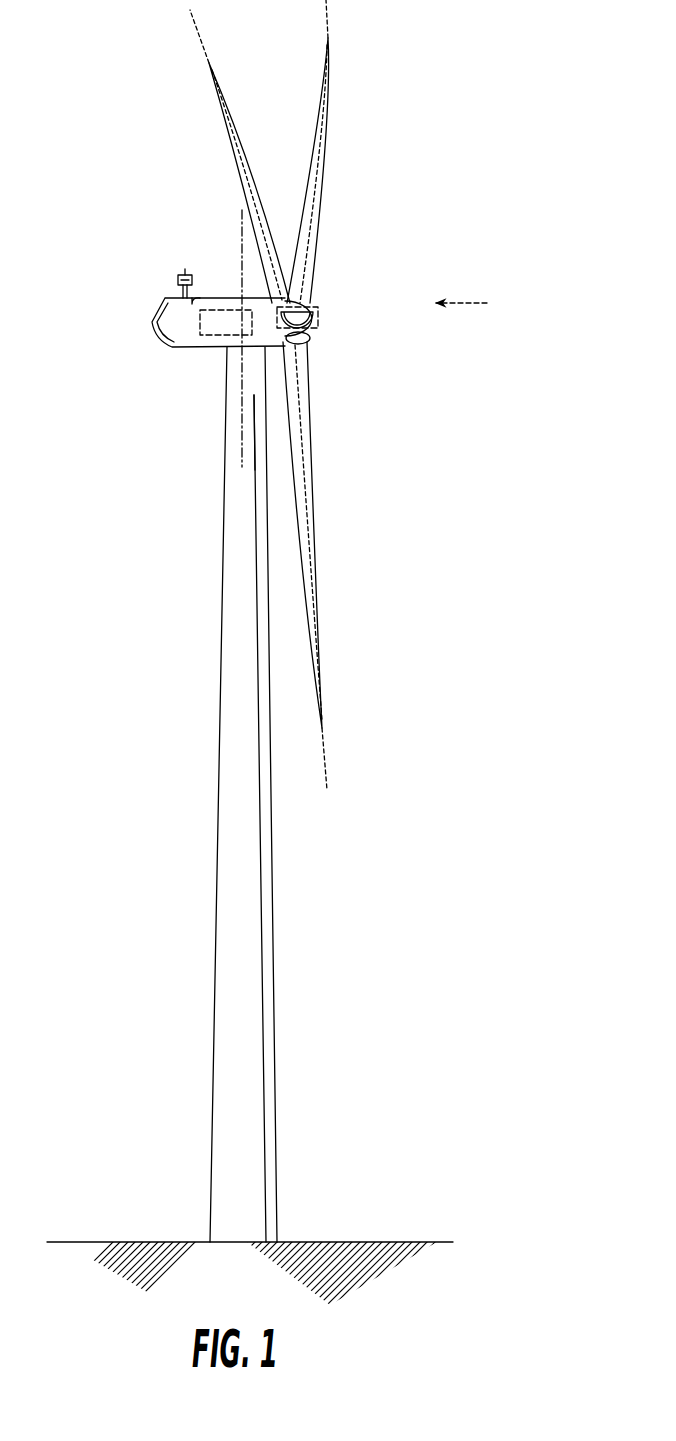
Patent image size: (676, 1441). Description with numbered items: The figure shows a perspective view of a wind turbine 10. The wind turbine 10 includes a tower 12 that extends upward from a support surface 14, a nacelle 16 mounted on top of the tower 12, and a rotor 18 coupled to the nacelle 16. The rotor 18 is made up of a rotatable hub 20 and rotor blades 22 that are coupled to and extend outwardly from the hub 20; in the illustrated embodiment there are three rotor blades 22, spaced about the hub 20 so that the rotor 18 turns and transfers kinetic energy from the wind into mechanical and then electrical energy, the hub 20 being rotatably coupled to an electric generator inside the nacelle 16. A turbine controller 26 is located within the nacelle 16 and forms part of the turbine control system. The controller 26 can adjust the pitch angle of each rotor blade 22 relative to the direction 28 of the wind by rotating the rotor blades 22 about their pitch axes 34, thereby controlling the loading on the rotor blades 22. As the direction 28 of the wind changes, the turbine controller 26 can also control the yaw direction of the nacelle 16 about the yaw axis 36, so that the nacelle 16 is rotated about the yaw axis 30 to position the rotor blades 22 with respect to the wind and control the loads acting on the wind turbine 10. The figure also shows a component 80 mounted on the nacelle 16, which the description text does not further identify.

The wind turbine 10 is at (431, 125).
The tower 12 is at (228, 917).
The support surface 14 is at (130, 1242).
The nacelle 16 is at (200, 348).
The rotor 18 is at (334, 295).
The rotatable hub 20 is at (324, 327).
The rotor blade 22 is at (308, 165).
The turbine controller 26 is at (223, 305).
The direction of the wind 28 is at (467, 303).
The yaw axis 30 is at (330, 320).
The pitch axis 34 is at (207, 60).
The yaw axis 36 is at (237, 408).
The sensor 80 is at (178, 280).